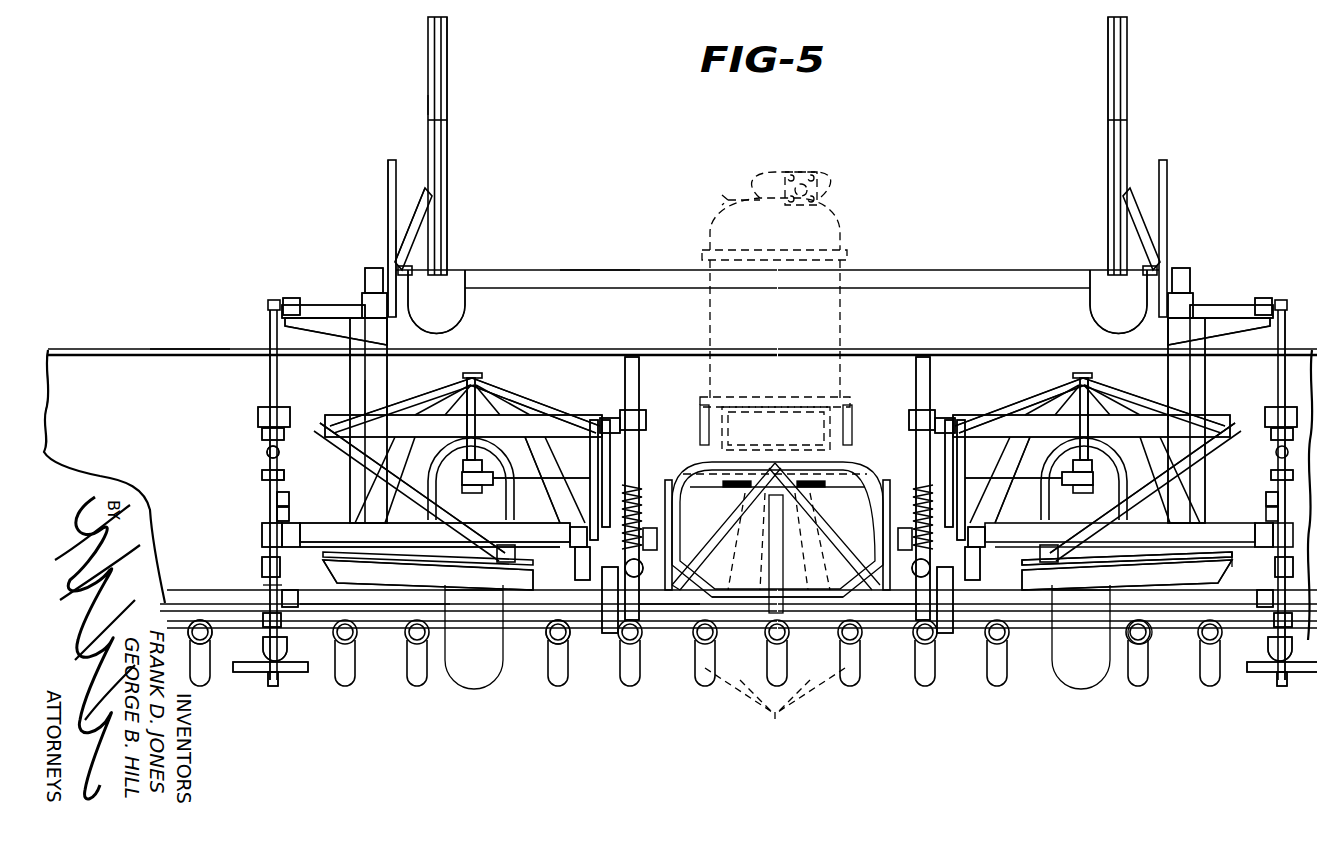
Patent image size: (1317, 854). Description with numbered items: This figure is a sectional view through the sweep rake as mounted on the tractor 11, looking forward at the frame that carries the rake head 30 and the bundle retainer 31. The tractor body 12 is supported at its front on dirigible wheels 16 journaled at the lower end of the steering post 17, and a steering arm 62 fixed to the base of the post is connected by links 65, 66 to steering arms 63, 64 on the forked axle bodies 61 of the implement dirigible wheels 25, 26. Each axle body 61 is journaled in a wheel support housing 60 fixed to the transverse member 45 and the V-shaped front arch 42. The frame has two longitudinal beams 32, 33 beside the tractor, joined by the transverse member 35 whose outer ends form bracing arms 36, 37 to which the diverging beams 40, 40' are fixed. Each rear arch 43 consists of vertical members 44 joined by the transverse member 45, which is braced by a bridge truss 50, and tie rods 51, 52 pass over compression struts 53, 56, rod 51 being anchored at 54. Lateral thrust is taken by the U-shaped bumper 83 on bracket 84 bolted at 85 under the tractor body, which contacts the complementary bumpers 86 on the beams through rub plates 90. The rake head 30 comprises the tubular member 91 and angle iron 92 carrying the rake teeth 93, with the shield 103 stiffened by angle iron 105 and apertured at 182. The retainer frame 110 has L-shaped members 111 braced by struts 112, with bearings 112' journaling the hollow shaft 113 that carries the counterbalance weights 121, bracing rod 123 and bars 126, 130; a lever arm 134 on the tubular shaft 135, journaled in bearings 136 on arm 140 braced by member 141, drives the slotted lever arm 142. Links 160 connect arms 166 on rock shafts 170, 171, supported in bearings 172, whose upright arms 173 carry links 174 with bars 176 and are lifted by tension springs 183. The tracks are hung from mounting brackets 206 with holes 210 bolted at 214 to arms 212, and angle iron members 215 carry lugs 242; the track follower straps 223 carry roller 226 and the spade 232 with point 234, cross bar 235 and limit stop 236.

The tractor 11 is at (858, 220).
The body 12 is at (735, 421).
The dirigible wheels 16 is at (775, 705).
The steering post 17 is at (808, 568).
The dirigible wheel 25 is at (477, 690).
The dirigible wheel 26 is at (1082, 690).
The rake head 30 is at (390, 645).
The bundle retainer 31 is at (419, 107).
The beam 32 is at (608, 634).
The beam 33 is at (950, 634).
The transverse member 35 is at (742, 590).
The bracing arm 36 is at (452, 524).
The bracing arm 37 is at (1180, 560).
The beam 40 is at (474, 637).
The beam 40' is at (1081, 637).
The V-shaped arch 42 is at (535, 445).
The second arch 43 is at (497, 404).
The vertical members 44 is at (322, 455).
The transverse member 45 is at (537, 405).
The bridge truss 50 is at (462, 392).
The tie rod 51 is at (382, 436).
The tie rod 52 is at (603, 466).
The compression strut 53 is at (320, 428).
The anchorage 54 is at (492, 572).
The compression strut 56 is at (604, 420).
The wheel support housing 60 is at (478, 392).
The forked axle body 61 is at (464, 445).
The steering arm 62 is at (769, 538).
The steering arm 63 is at (478, 460).
The steering arm 64 is at (1078, 460).
The link 65 is at (543, 493).
The link 66 is at (1062, 484).
The U-shaped bumper 83 is at (778, 460).
The bracket 84 is at (728, 464).
The bolts 85 is at (704, 410).
The complementary bumpers 86 is at (720, 528).
The rub plates 90 is at (737, 488).
The tubular member 91 is at (888, 615).
The transverse angle iron 92 is at (668, 630).
The rake teeth 93 is at (198, 676).
The sheet iron shield 103 is at (98, 378).
The angle iron 105 is at (185, 349).
The frame 110 is at (343, 396).
The angle iron member 111 is at (384, 394).
The vertical bracing strut 112 is at (777, 420).
The bearings 112' is at (778, 264).
The transverse hollow shaft 113 is at (605, 275).
The counterbalance weights 121 is at (452, 318).
The bracing rod 123 is at (447, 122).
The bar 126 is at (388, 205).
The bar 130 is at (430, 252).
The lever arm 134 is at (392, 242).
The tubular shaft 135 is at (316, 305).
The bearings 136 is at (289, 300).
The arm 140 is at (340, 318).
The bracing member 141 is at (322, 332).
The lever arm 142 is at (270, 333).
The links 160 is at (582, 480).
The arms 166 is at (583, 566).
The rock shaft 170 is at (397, 540).
The rock shaft 171 is at (1105, 568).
The bearings 172 is at (292, 547).
The upright arm 173 is at (277, 497).
The link 174 is at (262, 458).
The bars 176 is at (262, 432).
The aperture 182 is at (262, 410).
The tension springs 183 is at (590, 580).
The mounting bracket 206 is at (268, 470).
The holes 210 is at (284, 474).
The arm 212 is at (262, 535).
The bolt 214 is at (277, 512).
The angle iron member 215 is at (262, 568).
The straps 223 is at (263, 586).
The roller 226 is at (263, 620).
The spade 232 is at (1283, 674).
The spade point 234 is at (292, 672).
The cross bar 235 is at (303, 674).
The limit stop 236 is at (263, 645).
The lugs 242 is at (298, 598).